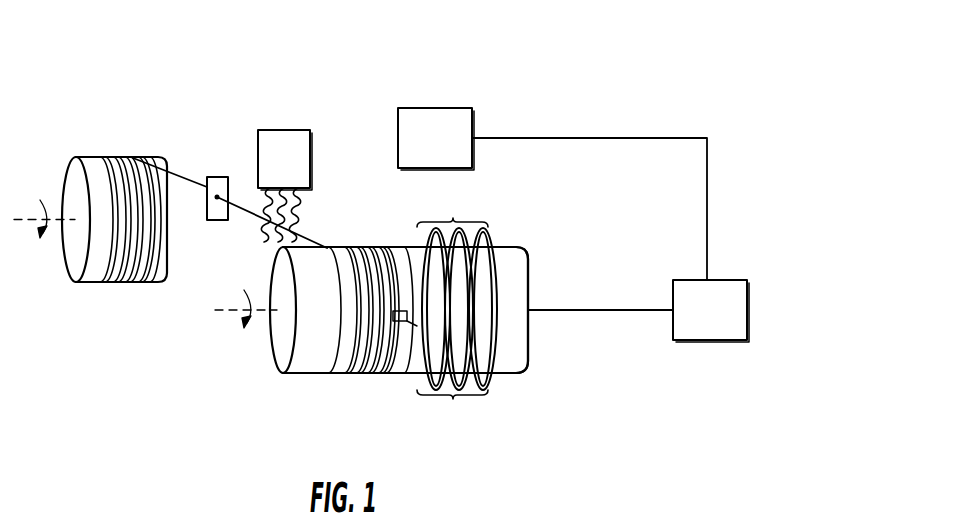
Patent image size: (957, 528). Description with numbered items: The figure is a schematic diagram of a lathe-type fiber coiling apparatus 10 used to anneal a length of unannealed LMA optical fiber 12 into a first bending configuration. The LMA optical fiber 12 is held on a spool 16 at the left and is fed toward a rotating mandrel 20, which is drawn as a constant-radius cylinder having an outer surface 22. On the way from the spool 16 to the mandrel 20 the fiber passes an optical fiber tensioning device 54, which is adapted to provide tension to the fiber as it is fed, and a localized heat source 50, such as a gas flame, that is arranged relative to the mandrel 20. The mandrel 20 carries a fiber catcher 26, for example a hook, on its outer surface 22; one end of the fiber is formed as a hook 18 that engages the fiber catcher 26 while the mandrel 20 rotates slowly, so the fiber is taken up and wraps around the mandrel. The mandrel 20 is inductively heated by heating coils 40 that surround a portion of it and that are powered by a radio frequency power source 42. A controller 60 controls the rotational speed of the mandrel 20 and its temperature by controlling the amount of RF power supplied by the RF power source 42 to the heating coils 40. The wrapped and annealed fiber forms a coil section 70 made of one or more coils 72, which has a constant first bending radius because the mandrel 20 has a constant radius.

The lathe-type fiber coiling apparatus 10 is at (586, 84).
The LMA optical fiber 12 is at (180, 177).
The spool 16 is at (72, 177).
The hook 18 is at (400, 311).
The rotating mandrel 20 is at (515, 247).
The outer surface 22 is at (513, 290).
The fiber catcher 26 is at (405, 321).
The heating coils 40 is at (457, 328).
The radio frequency power source 42 is at (438, 230).
The localized heat source 50 is at (294, 171).
The optical fiber tensioning device 54 is at (218, 177).
The controller 60 is at (722, 321).
The coil section 70 is at (338, 393).
The coils 72 is at (380, 373).